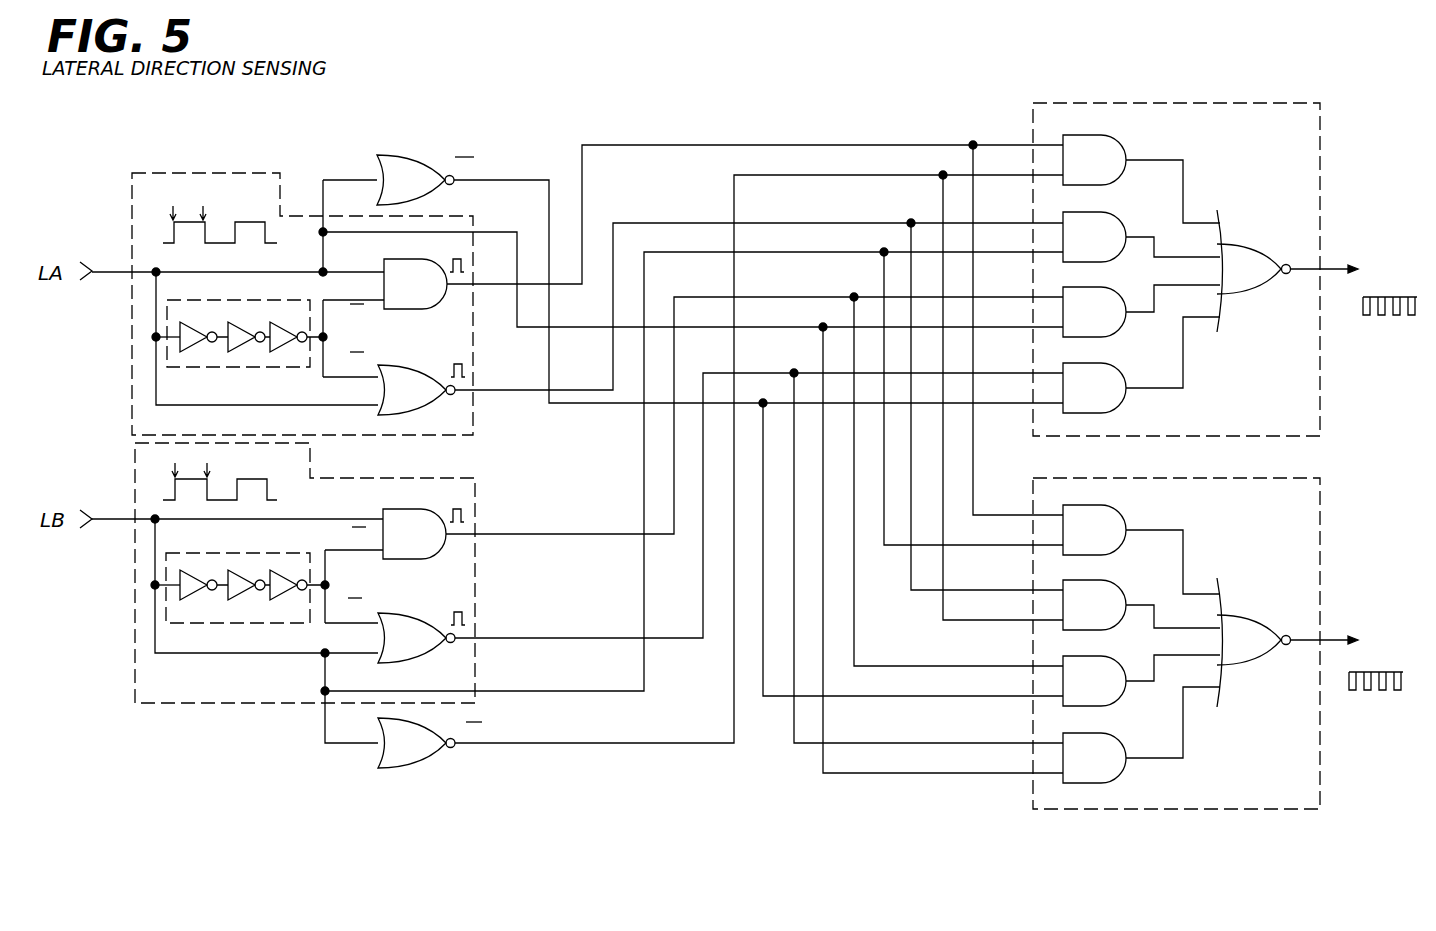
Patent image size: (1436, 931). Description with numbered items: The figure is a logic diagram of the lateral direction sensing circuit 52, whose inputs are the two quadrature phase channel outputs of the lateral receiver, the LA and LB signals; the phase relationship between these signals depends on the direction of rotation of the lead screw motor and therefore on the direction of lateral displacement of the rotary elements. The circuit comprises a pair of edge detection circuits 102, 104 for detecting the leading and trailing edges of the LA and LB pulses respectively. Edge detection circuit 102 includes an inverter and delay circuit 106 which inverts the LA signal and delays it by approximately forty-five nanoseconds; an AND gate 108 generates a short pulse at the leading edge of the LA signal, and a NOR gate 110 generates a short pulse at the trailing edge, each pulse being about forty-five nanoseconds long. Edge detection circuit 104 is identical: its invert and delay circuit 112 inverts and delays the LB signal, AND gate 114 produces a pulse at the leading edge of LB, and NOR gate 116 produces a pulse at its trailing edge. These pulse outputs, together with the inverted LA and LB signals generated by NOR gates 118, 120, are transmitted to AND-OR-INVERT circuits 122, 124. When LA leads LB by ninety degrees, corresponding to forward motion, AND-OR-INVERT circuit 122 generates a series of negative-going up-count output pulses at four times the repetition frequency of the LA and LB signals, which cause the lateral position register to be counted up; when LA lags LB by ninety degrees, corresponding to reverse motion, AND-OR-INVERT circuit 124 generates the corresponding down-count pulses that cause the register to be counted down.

The lateral direction sensing circuit 52 is at (565, 87).
The edge detection circuit 102 is at (270, 174).
The edge detection circuit 104 is at (213, 698).
The inverter and delay circuit 106 is at (231, 366).
The AND gate 108 is at (415, 302).
The NOR gate 110 is at (428, 398).
The invert and delay circuit 112 is at (234, 617).
The AND gate 114 is at (435, 540).
The NOR gate 116 is at (406, 651).
The NOR gate 118 is at (418, 165).
The NOR gate 120 is at (401, 762).
The AND-OR-INVERT circuit 122 is at (1266, 108).
The AND-OR-INVERT circuit 124 is at (1292, 487).